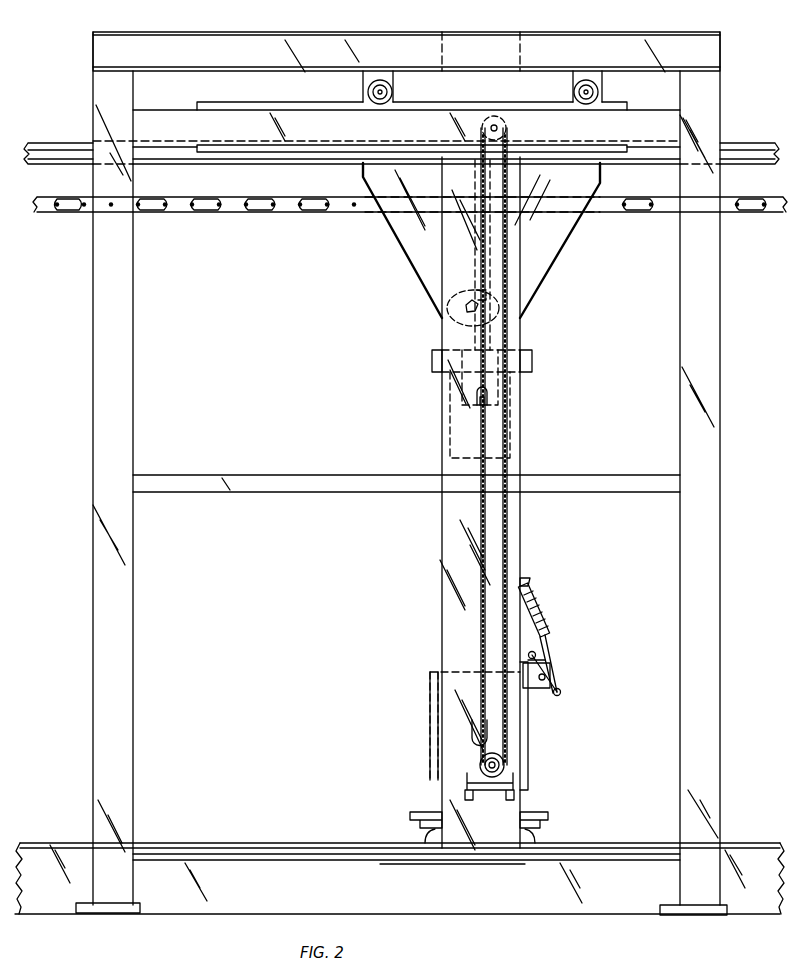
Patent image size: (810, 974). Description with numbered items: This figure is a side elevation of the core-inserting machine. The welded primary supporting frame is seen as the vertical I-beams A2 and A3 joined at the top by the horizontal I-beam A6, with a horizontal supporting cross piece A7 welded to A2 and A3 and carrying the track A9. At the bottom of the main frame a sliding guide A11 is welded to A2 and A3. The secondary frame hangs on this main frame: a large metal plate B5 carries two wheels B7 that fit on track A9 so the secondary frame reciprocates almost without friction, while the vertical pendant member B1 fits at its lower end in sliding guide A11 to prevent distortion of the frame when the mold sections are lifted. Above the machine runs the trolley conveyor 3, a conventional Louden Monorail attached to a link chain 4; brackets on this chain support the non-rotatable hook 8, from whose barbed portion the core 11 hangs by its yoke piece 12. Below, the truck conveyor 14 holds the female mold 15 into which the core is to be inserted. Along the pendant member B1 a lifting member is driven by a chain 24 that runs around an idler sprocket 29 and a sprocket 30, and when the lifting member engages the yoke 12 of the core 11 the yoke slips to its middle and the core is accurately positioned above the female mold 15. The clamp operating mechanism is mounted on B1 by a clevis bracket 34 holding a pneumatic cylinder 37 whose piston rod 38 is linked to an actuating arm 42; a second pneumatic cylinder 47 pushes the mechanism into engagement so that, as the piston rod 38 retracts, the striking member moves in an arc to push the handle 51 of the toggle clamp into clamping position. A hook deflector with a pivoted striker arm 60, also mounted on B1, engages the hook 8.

The horizontal I-beam A6 is at (706, 52).
The vertical I-beam A2 is at (124, 436).
The vertical I-beam A3 is at (713, 359).
The horizontal supporting cross piece A7 is at (231, 131).
The track A9 is at (274, 102).
The sliding guide A11 is at (268, 840).
The pendant member B1 is at (442, 579).
The metal plate B5 is at (420, 262).
The wheels B7 is at (386, 81).
The trolley conveyor 3 is at (690, 150).
The link chain 4 is at (768, 214).
The non-rotatable hook 8 is at (490, 298).
The core 11 is at (532, 362).
The yoke piece 12 is at (500, 343).
The truck conveyor 14 is at (410, 812).
The female mold 15 is at (430, 698).
The chain 24 is at (508, 726).
The idler sprocket 29 is at (505, 762).
The sprocket 30 is at (507, 128).
The clevis bracket 34 is at (528, 578).
The pneumatic cylinder 37 is at (543, 603).
The piston rod 38 is at (540, 657).
The actuating arm 42 is at (561, 692).
The pneumatic cylinder 47 is at (538, 685).
The handle of toggle clamp 51 is at (550, 660).
The striker arm 60 is at (472, 311).